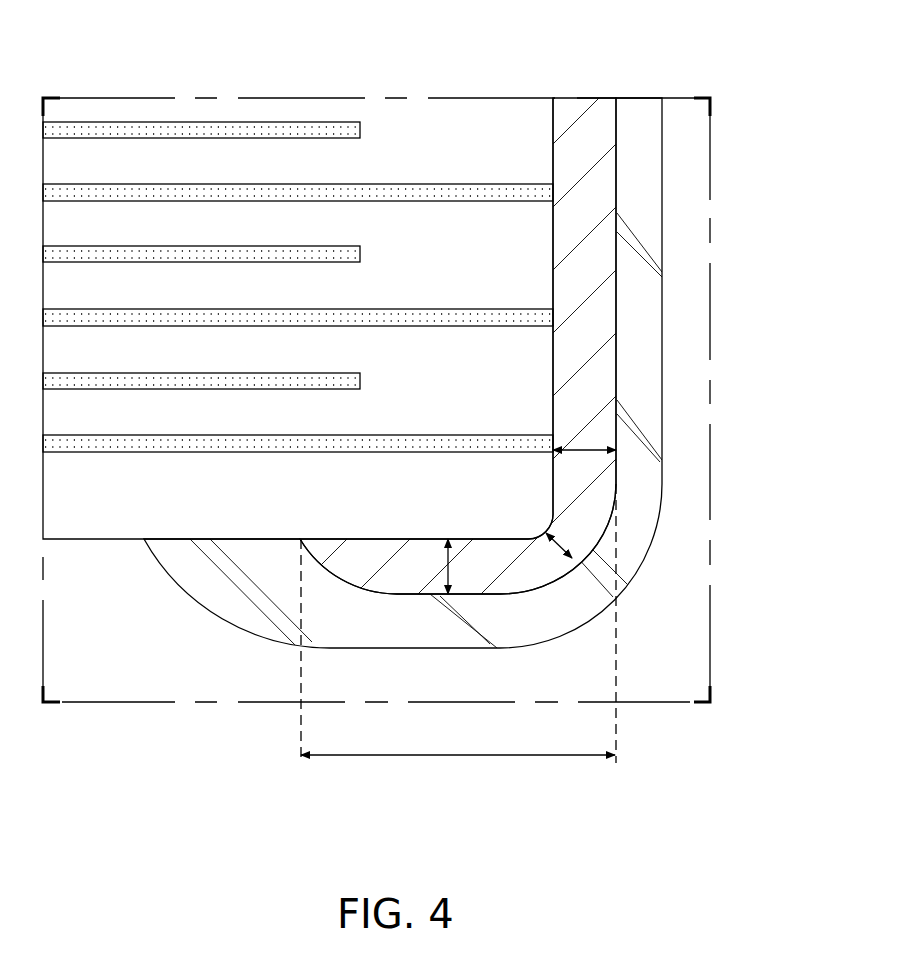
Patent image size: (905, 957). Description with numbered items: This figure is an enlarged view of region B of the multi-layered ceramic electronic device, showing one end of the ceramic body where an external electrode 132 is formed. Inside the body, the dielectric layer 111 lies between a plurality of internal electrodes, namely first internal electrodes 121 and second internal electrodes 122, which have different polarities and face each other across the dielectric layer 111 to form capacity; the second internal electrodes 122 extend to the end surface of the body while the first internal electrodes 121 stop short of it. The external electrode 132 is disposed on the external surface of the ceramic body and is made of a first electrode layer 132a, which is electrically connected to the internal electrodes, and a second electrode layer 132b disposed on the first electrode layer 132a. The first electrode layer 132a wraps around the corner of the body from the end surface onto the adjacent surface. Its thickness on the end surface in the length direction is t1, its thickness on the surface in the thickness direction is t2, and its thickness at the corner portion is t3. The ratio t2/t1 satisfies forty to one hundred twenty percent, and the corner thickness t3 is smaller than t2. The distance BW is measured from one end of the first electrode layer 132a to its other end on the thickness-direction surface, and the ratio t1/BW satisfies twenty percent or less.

The dielectric layer 111 is at (442, 128).
The first internal electrode 121 is at (332, 122).
The second internal electrode 122 is at (500, 188).
The external electrode 132 is at (469, 373).
The first electrode layer 132a is at (588, 484).
The second electrode layer 132b is at (630, 543).
The thickness of first electrode layer on third or fourth surface t1 is at (562, 458).
The thickness of first electrode layer on first or second surface t2 is at (447, 564).
The thickness of first electrode layer at corner portion t3 is at (546, 538).
The band width BW is at (458, 635).
The region B is at (388, 827).